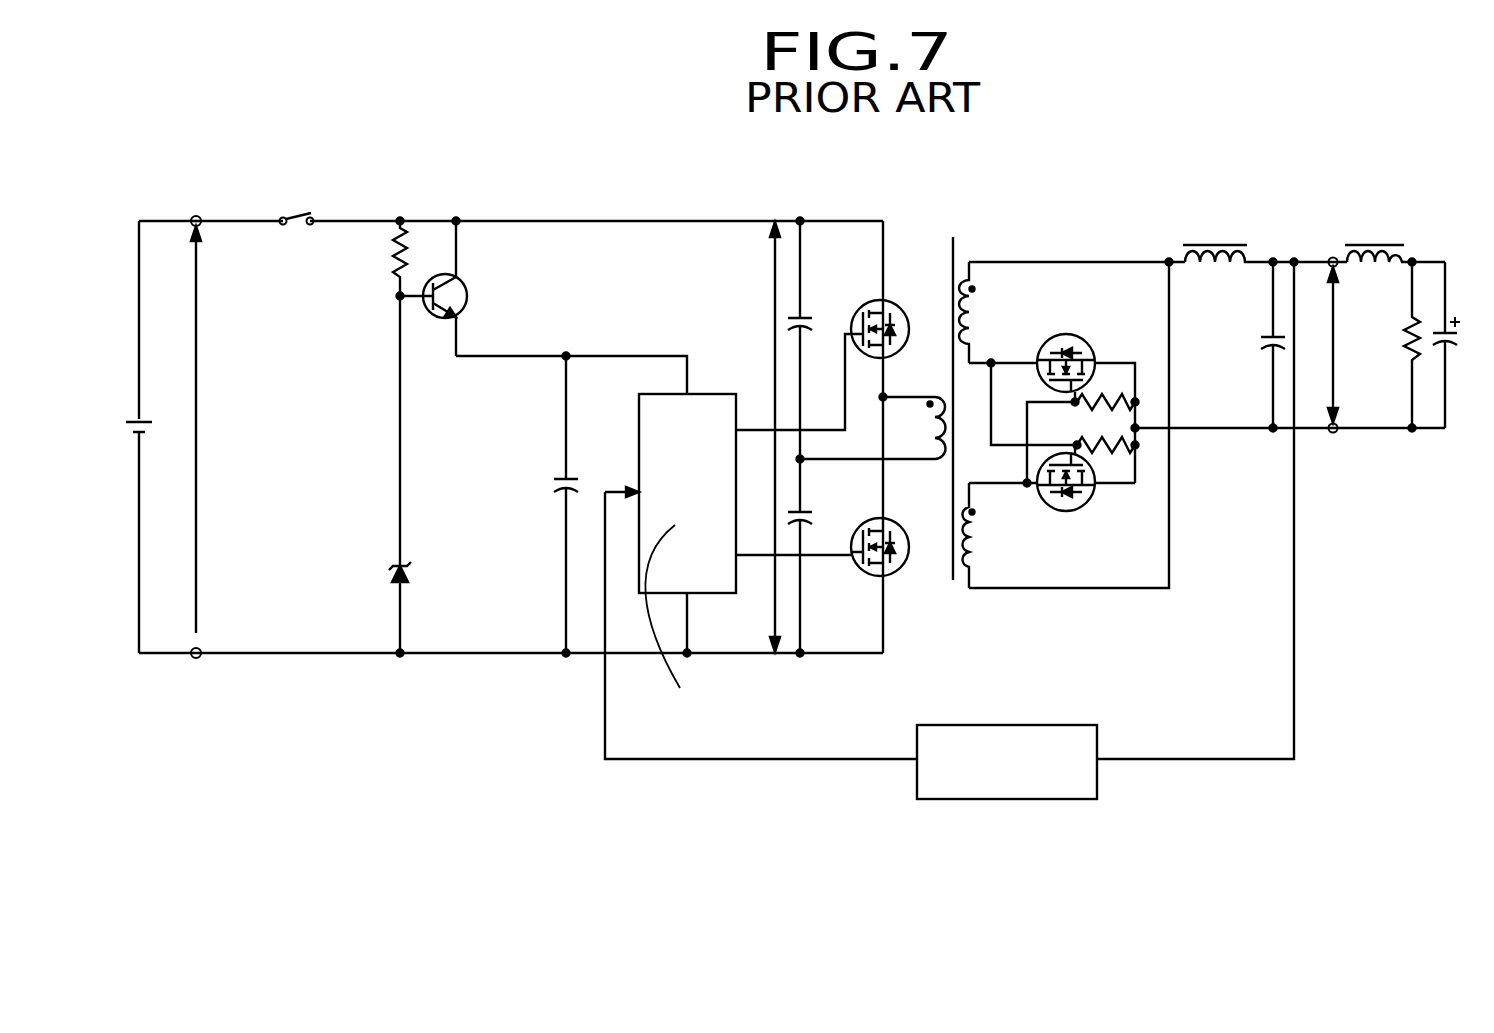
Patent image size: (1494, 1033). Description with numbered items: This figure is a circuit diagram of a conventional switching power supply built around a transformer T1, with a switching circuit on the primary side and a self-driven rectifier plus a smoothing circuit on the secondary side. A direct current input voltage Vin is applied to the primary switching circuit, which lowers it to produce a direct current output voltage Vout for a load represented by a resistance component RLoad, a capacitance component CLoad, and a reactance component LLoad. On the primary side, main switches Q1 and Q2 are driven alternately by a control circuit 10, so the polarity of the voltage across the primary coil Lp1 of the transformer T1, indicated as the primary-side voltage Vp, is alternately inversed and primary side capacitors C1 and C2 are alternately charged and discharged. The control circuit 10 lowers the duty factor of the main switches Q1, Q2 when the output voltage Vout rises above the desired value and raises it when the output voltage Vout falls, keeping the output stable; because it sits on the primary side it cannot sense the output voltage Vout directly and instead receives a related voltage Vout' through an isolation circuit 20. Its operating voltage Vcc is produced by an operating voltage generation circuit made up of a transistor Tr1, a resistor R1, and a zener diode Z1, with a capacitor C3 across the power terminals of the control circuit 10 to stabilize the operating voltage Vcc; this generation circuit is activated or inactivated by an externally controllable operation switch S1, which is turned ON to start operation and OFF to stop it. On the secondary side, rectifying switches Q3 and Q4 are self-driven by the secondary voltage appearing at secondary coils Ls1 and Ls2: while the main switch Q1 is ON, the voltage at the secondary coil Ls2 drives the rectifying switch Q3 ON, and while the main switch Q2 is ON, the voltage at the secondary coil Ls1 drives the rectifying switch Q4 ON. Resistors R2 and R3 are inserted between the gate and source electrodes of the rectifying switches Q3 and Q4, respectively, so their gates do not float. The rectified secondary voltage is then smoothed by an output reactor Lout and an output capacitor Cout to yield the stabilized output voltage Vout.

The control circuit 10 is at (637, 426).
The isolation circuit 20 is at (1015, 800).
The operation switch S1 is at (295, 207).
The resistor R1 is at (392, 267).
The transistor Tr1 is at (470, 292).
The zener diode Z1 is at (415, 573).
The capacitor C3 is at (553, 483).
The DC input voltage Vin is at (216, 437).
The operating voltage Vcc is at (628, 355).
The primary voltage Vp is at (758, 437).
The primary side capacitor C1 is at (815, 322).
The primary side capacitor C2 is at (820, 517).
The main switch Q1 is at (893, 300).
The main switch Q2 is at (897, 578).
The transformer T1 is at (933, 364).
The primary winding Lp1 is at (940, 468).
The secondary coil Ls1 is at (973, 312).
The secondary coil Ls2 is at (975, 560).
The rectifying switch Q3 is at (1087, 341).
The rectifying switch Q4 is at (1080, 511).
The resistor R2 is at (1108, 392).
The resistor R3 is at (1110, 458).
The output reactor Lout is at (1218, 242).
The output capacitor Cout is at (1264, 341).
The DC output voltage Vout is at (1321, 345).
The reactance component LLoad is at (1375, 243).
The capacitance component CLoad is at (1435, 322).
The resistance component RLoad is at (1405, 352).
The voltage associated with the output voltage Vout' is at (761, 665).